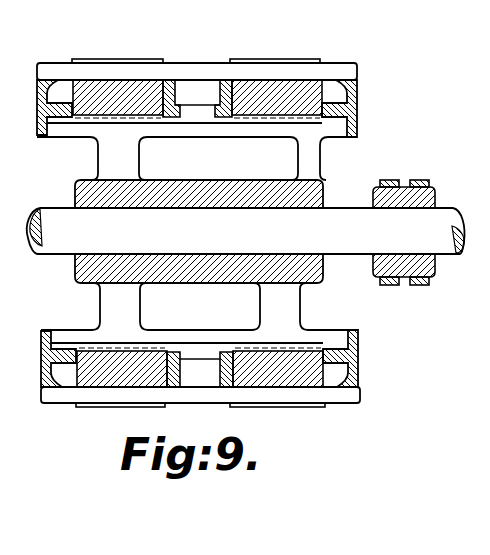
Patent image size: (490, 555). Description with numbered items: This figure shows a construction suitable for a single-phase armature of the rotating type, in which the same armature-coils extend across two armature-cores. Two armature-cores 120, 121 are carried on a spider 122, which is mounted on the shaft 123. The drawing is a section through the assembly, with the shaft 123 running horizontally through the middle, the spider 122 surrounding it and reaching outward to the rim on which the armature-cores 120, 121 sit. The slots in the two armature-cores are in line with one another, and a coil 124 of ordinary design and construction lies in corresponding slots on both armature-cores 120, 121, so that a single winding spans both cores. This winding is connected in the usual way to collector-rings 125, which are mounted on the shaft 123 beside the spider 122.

The armature-core 120 is at (109, 59).
The armature-core 121 is at (295, 59).
The spider 122 is at (173, 133).
The shaft 123 is at (246, 231).
The coil 124 is at (192, 68).
The collector-rings 125 is at (392, 182).